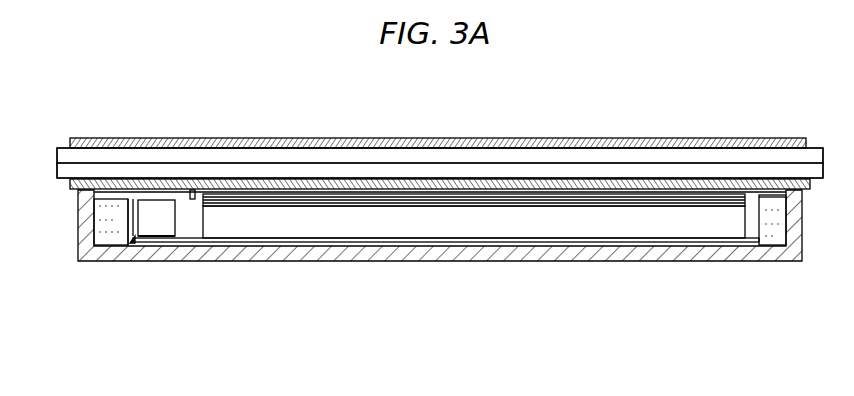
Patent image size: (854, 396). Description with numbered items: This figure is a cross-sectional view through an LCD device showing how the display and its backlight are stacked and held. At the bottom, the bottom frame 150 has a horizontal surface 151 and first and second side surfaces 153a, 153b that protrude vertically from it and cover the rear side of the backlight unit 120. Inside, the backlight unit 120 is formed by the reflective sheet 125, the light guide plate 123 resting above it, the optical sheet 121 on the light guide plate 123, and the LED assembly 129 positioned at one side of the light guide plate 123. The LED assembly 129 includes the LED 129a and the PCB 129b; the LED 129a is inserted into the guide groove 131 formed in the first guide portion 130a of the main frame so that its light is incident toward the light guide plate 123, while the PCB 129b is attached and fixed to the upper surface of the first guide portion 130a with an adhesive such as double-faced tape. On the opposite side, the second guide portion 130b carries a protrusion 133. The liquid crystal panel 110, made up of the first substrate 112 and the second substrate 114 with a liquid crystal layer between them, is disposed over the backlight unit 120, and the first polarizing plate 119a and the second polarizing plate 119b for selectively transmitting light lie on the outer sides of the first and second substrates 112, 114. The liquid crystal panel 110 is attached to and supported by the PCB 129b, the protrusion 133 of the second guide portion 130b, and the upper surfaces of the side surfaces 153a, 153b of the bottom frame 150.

The liquid crystal panel 110 is at (440, 117).
The first substrate 112 is at (447, 172).
The second substrate 114 is at (395, 157).
The first polarizing plate 119a is at (277, 173).
The second polarizing plate 119b is at (237, 137).
The backlight unit 120 is at (446, 285).
The optical sheet 121 is at (322, 215).
The light guide plate 123 is at (290, 203).
The reflective sheet 125 is at (233, 247).
The LED assembly 129 is at (178, 264).
The LED 129a is at (158, 226).
The PCB 129b is at (191, 199).
The first guide portion 130a is at (110, 208).
The second guide portion 130b is at (771, 229).
The guide groove 131 is at (133, 246).
The protrusion 133 is at (772, 200).
The bottom frame 150 is at (693, 280).
The horizontal surface 151 is at (450, 258).
The first side surface 153a is at (87, 222).
The second side surface 153b is at (801, 217).